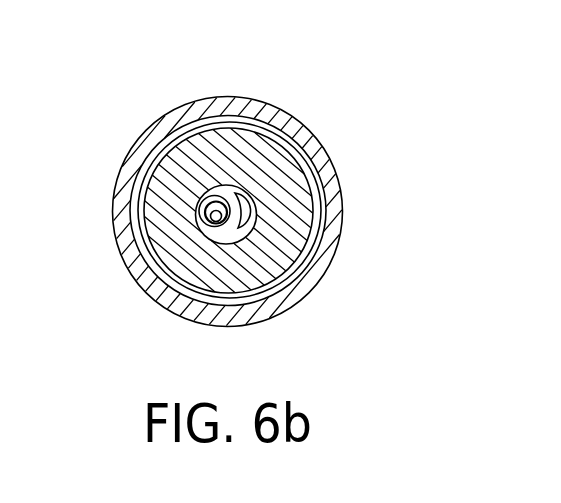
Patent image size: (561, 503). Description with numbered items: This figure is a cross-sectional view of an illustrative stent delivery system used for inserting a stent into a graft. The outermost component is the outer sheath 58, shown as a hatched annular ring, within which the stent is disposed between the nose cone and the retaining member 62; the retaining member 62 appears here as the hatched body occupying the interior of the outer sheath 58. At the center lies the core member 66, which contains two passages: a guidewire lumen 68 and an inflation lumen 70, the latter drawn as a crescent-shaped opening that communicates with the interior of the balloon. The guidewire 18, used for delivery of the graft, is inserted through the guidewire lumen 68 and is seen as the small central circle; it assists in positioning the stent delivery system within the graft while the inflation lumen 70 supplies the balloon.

The outer sheath 58 is at (335, 212).
The retaining member 62 is at (212, 153).
The core member 66 is at (227, 190).
The inflation lumen 70 is at (247, 208).
The guidewire lumen 68 is at (198, 206).
The guidewire 18 is at (216, 222).